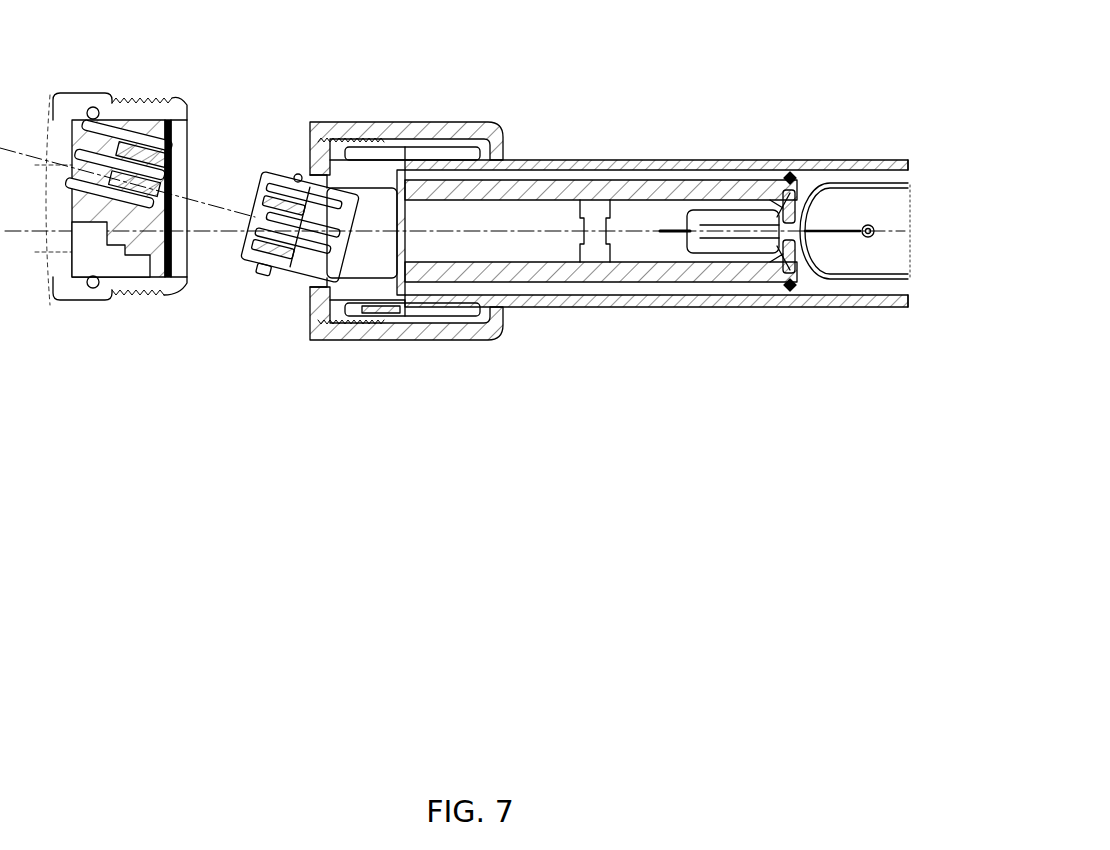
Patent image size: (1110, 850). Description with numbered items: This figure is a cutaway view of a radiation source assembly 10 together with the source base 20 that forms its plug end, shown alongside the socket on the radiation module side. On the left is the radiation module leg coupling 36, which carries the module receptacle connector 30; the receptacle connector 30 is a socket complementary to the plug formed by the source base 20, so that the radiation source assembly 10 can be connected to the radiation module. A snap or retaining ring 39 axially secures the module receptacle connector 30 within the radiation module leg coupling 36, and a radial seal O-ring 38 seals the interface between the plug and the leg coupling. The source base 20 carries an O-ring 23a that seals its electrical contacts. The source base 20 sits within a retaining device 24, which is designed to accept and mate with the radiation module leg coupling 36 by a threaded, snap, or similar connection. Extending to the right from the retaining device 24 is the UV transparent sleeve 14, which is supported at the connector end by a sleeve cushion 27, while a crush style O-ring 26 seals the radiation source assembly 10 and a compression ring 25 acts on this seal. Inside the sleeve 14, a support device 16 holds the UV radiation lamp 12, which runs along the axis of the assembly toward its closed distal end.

The radiation source assembly 10 is at (691, 356).
The UV radiation lamp 12 is at (866, 178).
The UV transparent sleeve 14 is at (538, 159).
The support device 16 is at (665, 178).
The source base 20 is at (272, 166).
The O-ring 23a is at (266, 284).
The retaining device 24 is at (440, 123).
The compression ring 25 is at (433, 315).
The crush style O-ring 26 is at (363, 316).
The sleeve cushion 27 is at (327, 318).
The module receptacle connector 30 is at (187, 118).
The radiation module leg coupling 36 is at (97, 90).
The radial seal O-ring 38 is at (108, 290).
The snap or retaining ring 39 is at (168, 126).